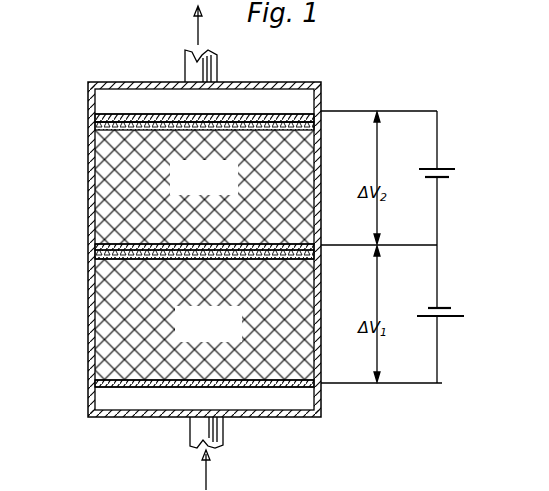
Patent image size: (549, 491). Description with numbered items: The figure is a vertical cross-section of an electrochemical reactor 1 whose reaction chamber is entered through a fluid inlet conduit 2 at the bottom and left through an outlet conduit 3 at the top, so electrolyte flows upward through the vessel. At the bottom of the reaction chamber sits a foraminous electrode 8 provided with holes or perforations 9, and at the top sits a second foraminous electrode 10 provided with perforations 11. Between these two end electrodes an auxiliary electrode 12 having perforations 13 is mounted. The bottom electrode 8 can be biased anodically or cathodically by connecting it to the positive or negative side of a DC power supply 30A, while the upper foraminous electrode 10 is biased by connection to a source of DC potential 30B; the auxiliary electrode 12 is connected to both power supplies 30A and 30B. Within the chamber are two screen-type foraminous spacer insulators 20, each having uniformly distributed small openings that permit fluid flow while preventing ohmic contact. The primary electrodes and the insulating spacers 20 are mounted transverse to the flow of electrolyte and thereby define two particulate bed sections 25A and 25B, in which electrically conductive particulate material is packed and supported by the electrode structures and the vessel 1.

The reactor 1 is at (88, 317).
The fluid inlet conduit 2 is at (207, 428).
The outlet conduit 3 is at (213, 68).
The foraminous electrode 8 is at (268, 388).
The perforations 9 is at (176, 388).
The second foraminous electrode 10 is at (296, 114).
The perforations 11 is at (153, 114).
The auxiliary electrode 12 is at (268, 244).
The perforations 13 is at (163, 246).
The foraminous spacer insulators 20 is at (272, 122).
The particulate bed section 25A is at (236, 335).
The particulate bed section 25B is at (230, 188).
The DC power supply 30A is at (451, 308).
The source of DC potential 30B is at (449, 177).